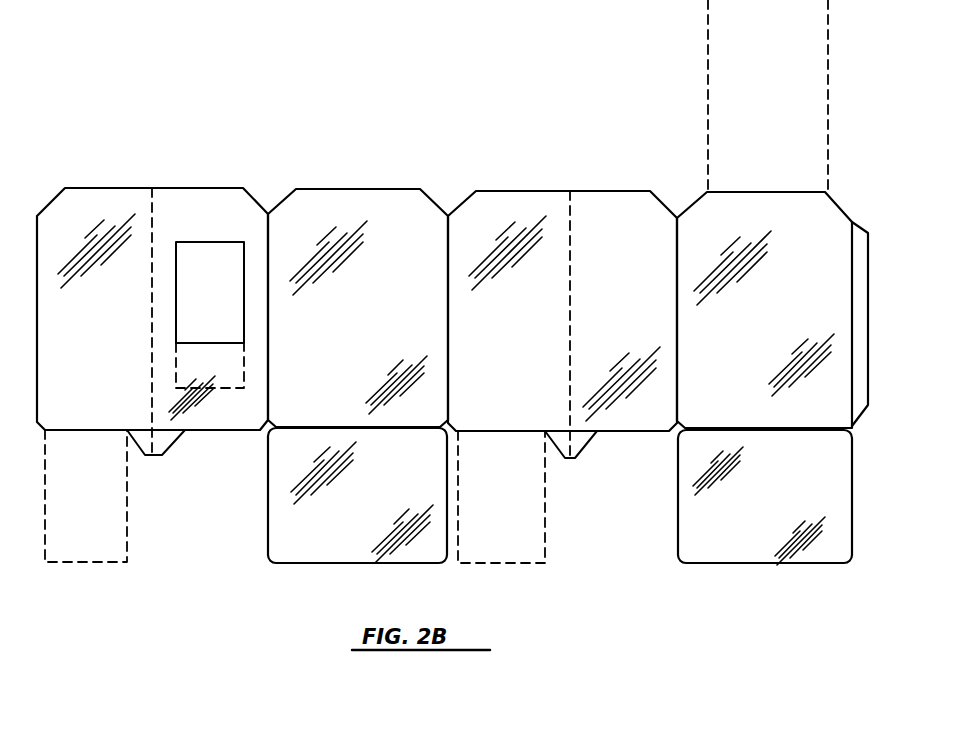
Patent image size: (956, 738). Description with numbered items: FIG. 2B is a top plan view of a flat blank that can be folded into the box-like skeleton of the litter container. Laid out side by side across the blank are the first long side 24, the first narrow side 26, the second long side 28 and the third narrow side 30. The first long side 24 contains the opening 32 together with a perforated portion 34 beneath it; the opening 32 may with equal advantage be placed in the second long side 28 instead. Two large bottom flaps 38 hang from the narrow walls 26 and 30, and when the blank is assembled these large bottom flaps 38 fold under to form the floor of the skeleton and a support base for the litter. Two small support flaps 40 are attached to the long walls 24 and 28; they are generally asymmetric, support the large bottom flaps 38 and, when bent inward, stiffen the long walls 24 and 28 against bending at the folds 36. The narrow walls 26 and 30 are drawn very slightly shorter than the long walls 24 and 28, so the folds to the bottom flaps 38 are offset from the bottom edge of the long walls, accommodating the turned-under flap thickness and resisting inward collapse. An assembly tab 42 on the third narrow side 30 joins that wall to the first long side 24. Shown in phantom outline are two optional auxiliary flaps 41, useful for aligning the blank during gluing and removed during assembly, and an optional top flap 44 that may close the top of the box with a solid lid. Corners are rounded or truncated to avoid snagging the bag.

The first long side 24 is at (103, 341).
The first narrow side 26 is at (370, 315).
The second long side 28 is at (521, 315).
The third narrow side 30 is at (781, 315).
The opening 32 is at (221, 299).
The perforated portion 34 is at (224, 376).
The folds 36 is at (152, 380).
The large bottom flaps 38 is at (372, 504).
The small support flaps 40 is at (182, 440).
The auxiliary flaps 41 is at (113, 528).
The assembly tab 42 is at (862, 232).
The top flap 44 is at (707, 95).